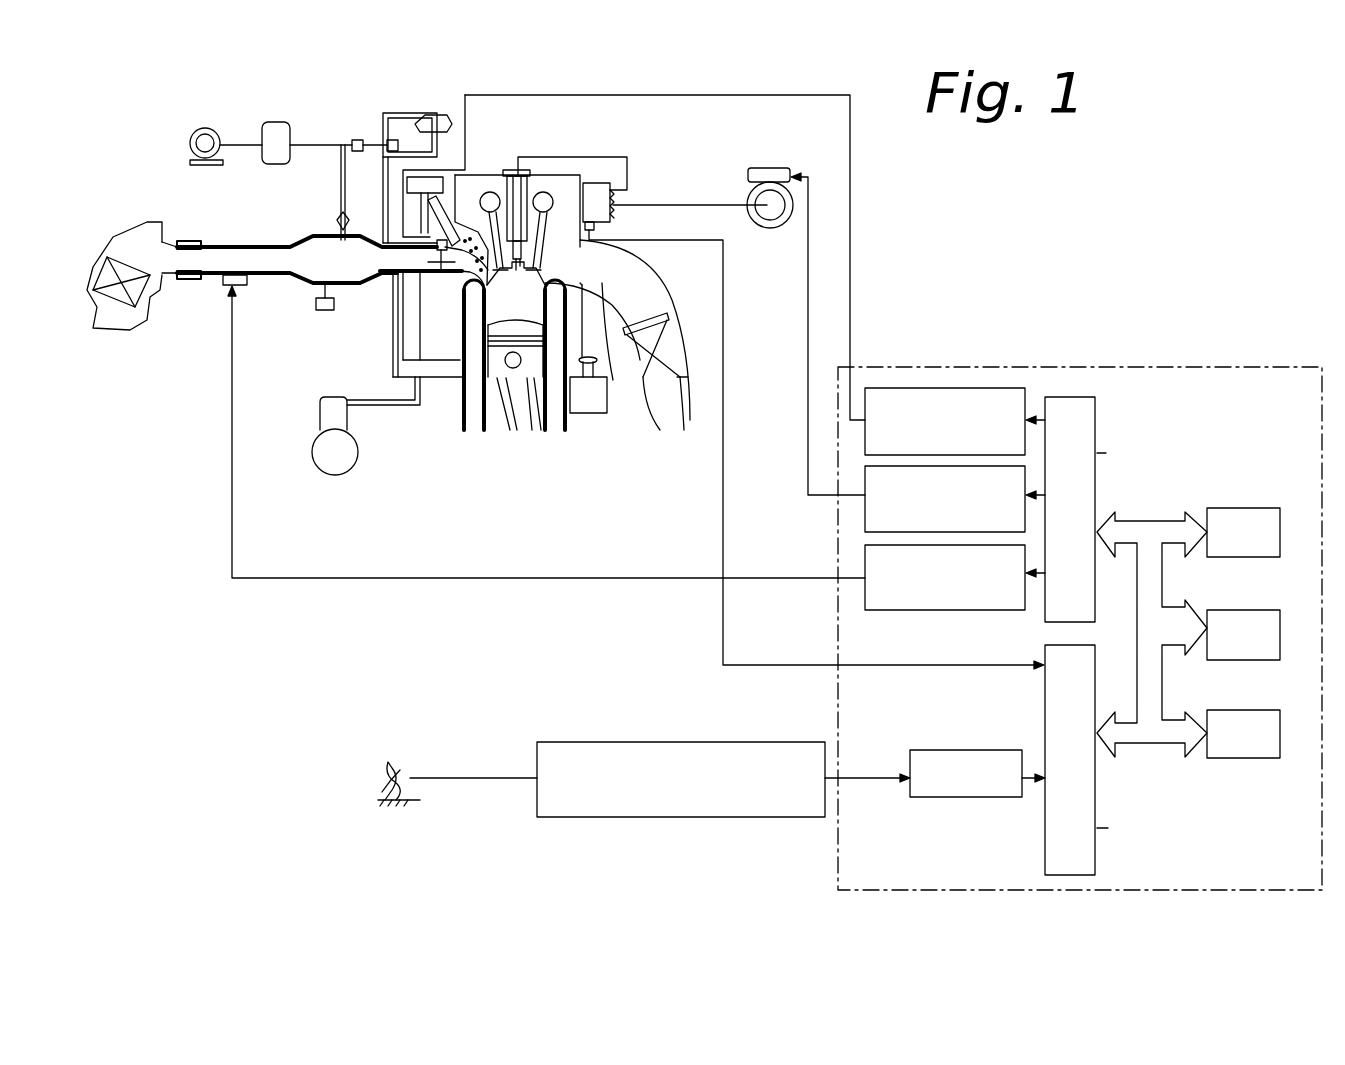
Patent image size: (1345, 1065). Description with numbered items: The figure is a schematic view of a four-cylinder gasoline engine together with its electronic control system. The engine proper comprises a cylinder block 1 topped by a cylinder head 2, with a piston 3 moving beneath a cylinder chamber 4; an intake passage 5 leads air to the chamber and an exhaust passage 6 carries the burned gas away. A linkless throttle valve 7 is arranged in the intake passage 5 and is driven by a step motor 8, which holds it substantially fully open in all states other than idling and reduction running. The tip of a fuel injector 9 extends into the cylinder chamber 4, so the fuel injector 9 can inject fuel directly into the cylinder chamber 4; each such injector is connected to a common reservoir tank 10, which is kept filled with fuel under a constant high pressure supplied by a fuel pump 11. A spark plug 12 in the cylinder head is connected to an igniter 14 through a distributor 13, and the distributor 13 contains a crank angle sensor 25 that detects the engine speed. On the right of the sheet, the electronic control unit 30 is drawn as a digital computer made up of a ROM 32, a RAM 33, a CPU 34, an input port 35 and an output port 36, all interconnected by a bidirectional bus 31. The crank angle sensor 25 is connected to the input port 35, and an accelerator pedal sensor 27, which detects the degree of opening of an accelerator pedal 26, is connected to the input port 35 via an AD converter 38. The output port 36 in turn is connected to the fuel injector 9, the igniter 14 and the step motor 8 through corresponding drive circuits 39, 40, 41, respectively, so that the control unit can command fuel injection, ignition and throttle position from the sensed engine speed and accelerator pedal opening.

The cylinder block 1 is at (460, 297).
The cylinder head 2 is at (568, 247).
The piston 3 is at (497, 380).
The cylinder chamber 4 is at (628, 412).
The intake passage 5 is at (272, 245).
The exhaust passage 6 is at (627, 282).
The linkless throttle valve 7 is at (213, 245).
The step motor 8 is at (225, 288).
The fuel injector 9 is at (407, 238).
The reservoir tank 10 is at (407, 187).
The fuel pump 11 is at (345, 457).
The spark plug 12 is at (506, 172).
The distributor 13 is at (594, 188).
The igniter 14 is at (767, 168).
The crank angle sensor 25 is at (600, 224).
The accelerator pedal 26 is at (392, 757).
The accelerator pedal sensor 27 is at (593, 742).
The electronic control unit 30 is at (1150, 362).
The bidirectional bus 31 is at (1145, 520).
The ROM 32 is at (1230, 508).
The RAM 33 is at (1228, 609).
The CPU 34 is at (1226, 710).
The input port 35 is at (1050, 645).
The output port 36 is at (1097, 420).
The AD converter 38 is at (934, 750).
The drive circuit 39 is at (865, 447).
The drive circuit 40 is at (865, 525).
The drive circuit 41 is at (865, 608).